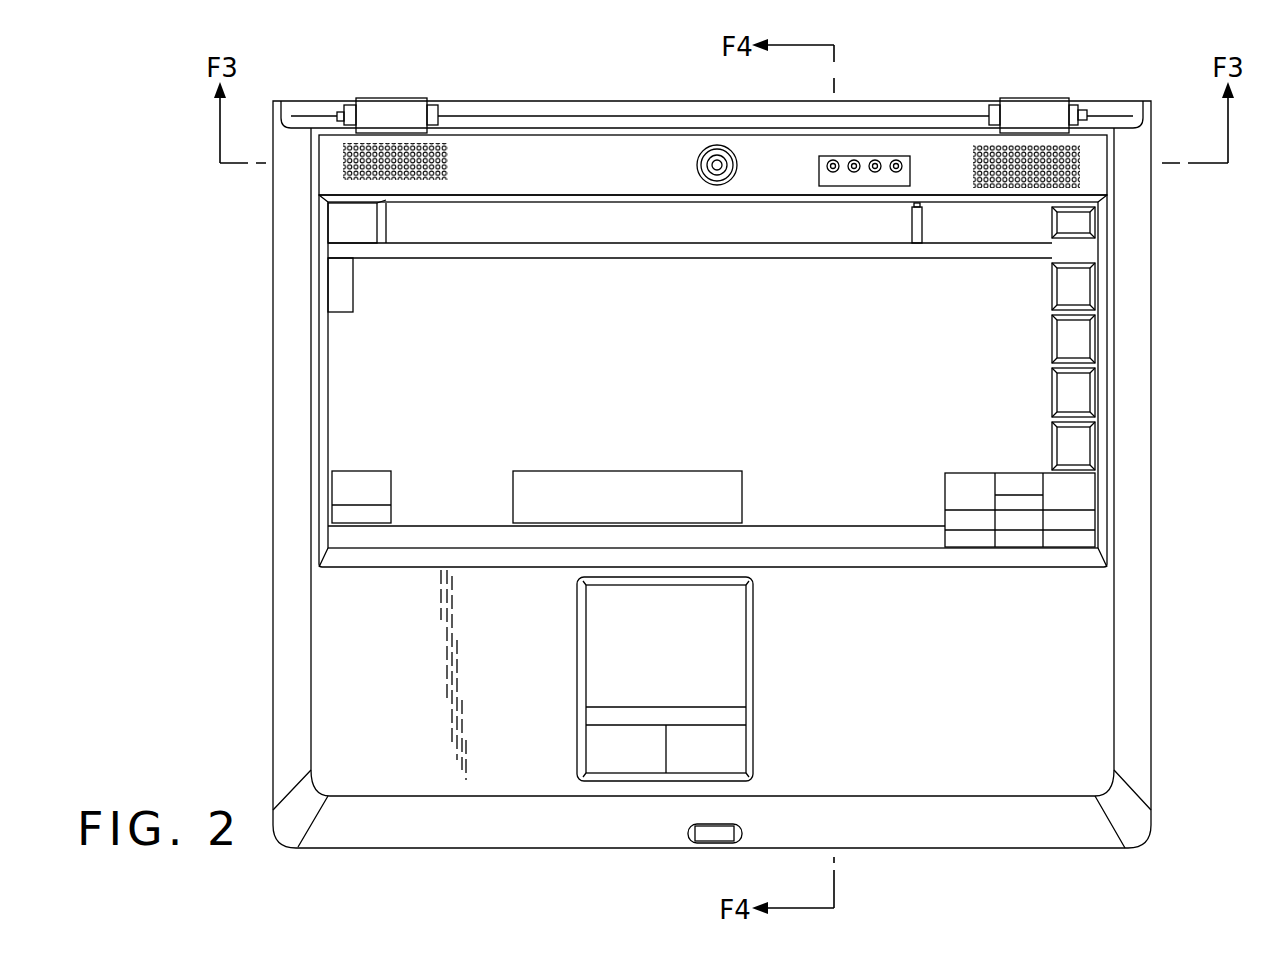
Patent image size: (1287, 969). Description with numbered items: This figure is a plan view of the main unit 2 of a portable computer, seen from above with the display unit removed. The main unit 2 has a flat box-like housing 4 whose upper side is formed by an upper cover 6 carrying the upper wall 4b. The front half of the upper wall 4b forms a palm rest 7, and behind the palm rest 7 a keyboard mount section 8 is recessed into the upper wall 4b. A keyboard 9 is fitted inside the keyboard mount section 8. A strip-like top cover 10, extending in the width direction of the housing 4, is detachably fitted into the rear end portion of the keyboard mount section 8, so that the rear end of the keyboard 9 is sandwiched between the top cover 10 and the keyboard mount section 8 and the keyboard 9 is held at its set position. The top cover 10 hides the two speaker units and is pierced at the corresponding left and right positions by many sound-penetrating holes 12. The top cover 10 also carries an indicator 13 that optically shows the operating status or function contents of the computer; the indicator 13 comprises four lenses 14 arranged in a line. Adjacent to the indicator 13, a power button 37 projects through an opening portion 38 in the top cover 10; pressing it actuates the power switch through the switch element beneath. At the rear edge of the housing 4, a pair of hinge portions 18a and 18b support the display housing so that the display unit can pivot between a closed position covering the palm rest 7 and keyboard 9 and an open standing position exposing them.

The main unit 2 is at (1162, 606).
The housing 4 is at (273, 643).
The upper wall 4b is at (773, 698).
The upper cover 6 is at (427, 832).
The palm rest 7 is at (952, 735).
The keyboard mount section 8 is at (332, 353).
The keyboard 9 is at (1082, 448).
The top cover 10 is at (620, 180).
The sound-penetrating holes 12 is at (448, 176).
The indicator 13 is at (853, 188).
The lenses 14 is at (896, 158).
The hinge portion 18a is at (390, 118).
The hinge portion 18b is at (1033, 118).
The power button 37 is at (712, 187).
The opening portion 38 is at (697, 166).